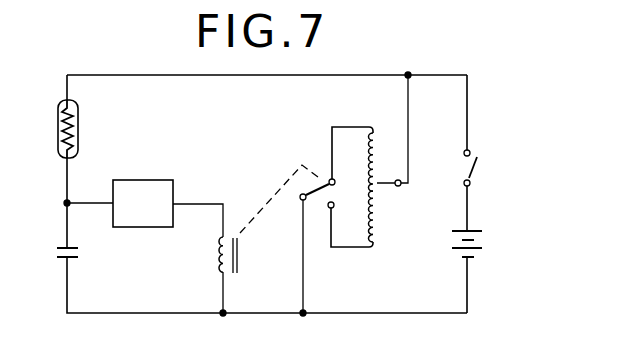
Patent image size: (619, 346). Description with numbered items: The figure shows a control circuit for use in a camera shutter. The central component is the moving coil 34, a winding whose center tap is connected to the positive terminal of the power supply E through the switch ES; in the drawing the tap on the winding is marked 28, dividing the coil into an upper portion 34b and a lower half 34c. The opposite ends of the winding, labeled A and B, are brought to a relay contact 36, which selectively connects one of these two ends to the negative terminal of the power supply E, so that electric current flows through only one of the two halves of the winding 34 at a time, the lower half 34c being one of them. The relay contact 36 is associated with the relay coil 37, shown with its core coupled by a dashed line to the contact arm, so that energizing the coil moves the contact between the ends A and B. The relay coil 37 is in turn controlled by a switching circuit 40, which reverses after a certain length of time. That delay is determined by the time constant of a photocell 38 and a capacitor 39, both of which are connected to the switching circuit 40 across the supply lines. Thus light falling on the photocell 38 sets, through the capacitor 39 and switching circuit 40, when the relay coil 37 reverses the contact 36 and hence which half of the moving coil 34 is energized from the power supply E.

The tap contact 28 is at (388, 188).
The moving coil 34 is at (379, 191).
The upper coil portion 34b is at (383, 115).
The half of the winding 34c is at (378, 243).
The relay contact 36 is at (323, 177).
The relay coil 37 is at (217, 255).
The photocell 38 is at (80, 131).
The capacitor 39 is at (55, 251).
The switching circuit 40 is at (157, 216).
The switch ES is at (474, 164).
The power supply E is at (486, 241).